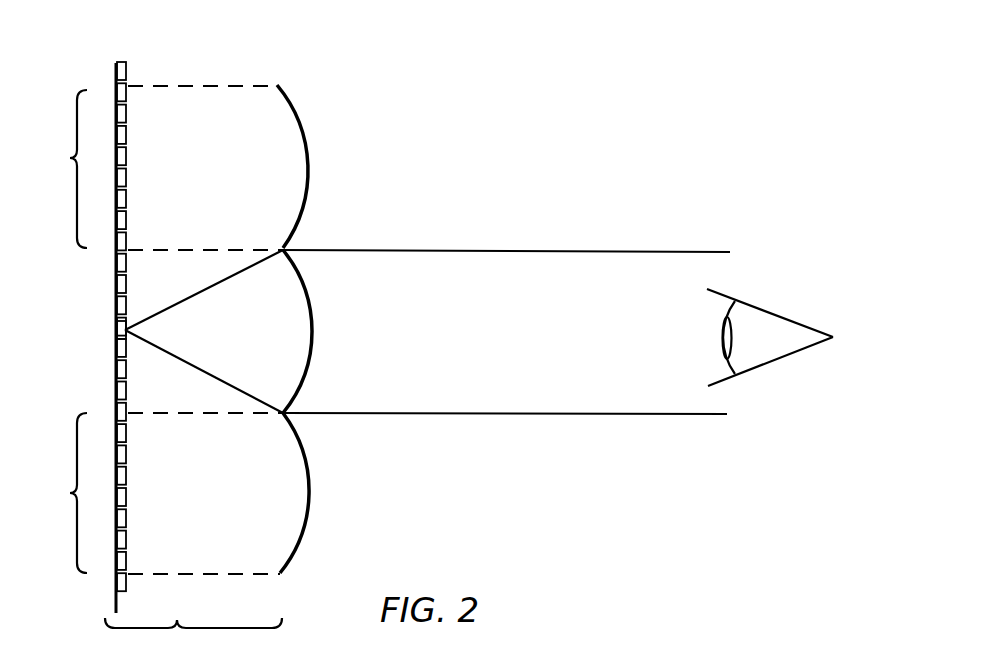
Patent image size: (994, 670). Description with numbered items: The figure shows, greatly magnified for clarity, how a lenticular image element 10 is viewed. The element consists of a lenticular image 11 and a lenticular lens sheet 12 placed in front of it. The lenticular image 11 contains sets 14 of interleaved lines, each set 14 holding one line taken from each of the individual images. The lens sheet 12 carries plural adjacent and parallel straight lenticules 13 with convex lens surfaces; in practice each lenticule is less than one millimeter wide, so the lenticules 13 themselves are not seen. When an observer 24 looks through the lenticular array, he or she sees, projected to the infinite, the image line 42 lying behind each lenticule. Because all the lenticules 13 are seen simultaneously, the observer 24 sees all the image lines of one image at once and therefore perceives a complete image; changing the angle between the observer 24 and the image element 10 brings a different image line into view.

The lenticular image element 10 is at (193, 643).
The lenticular image 11 is at (130, 57).
The lenticular lens sheet 12 is at (197, 83).
The lenticules 13 is at (308, 177).
The sets of interleaved lines 14 is at (64, 331).
The observer 24 is at (780, 327).
The image line 42 is at (118, 330).